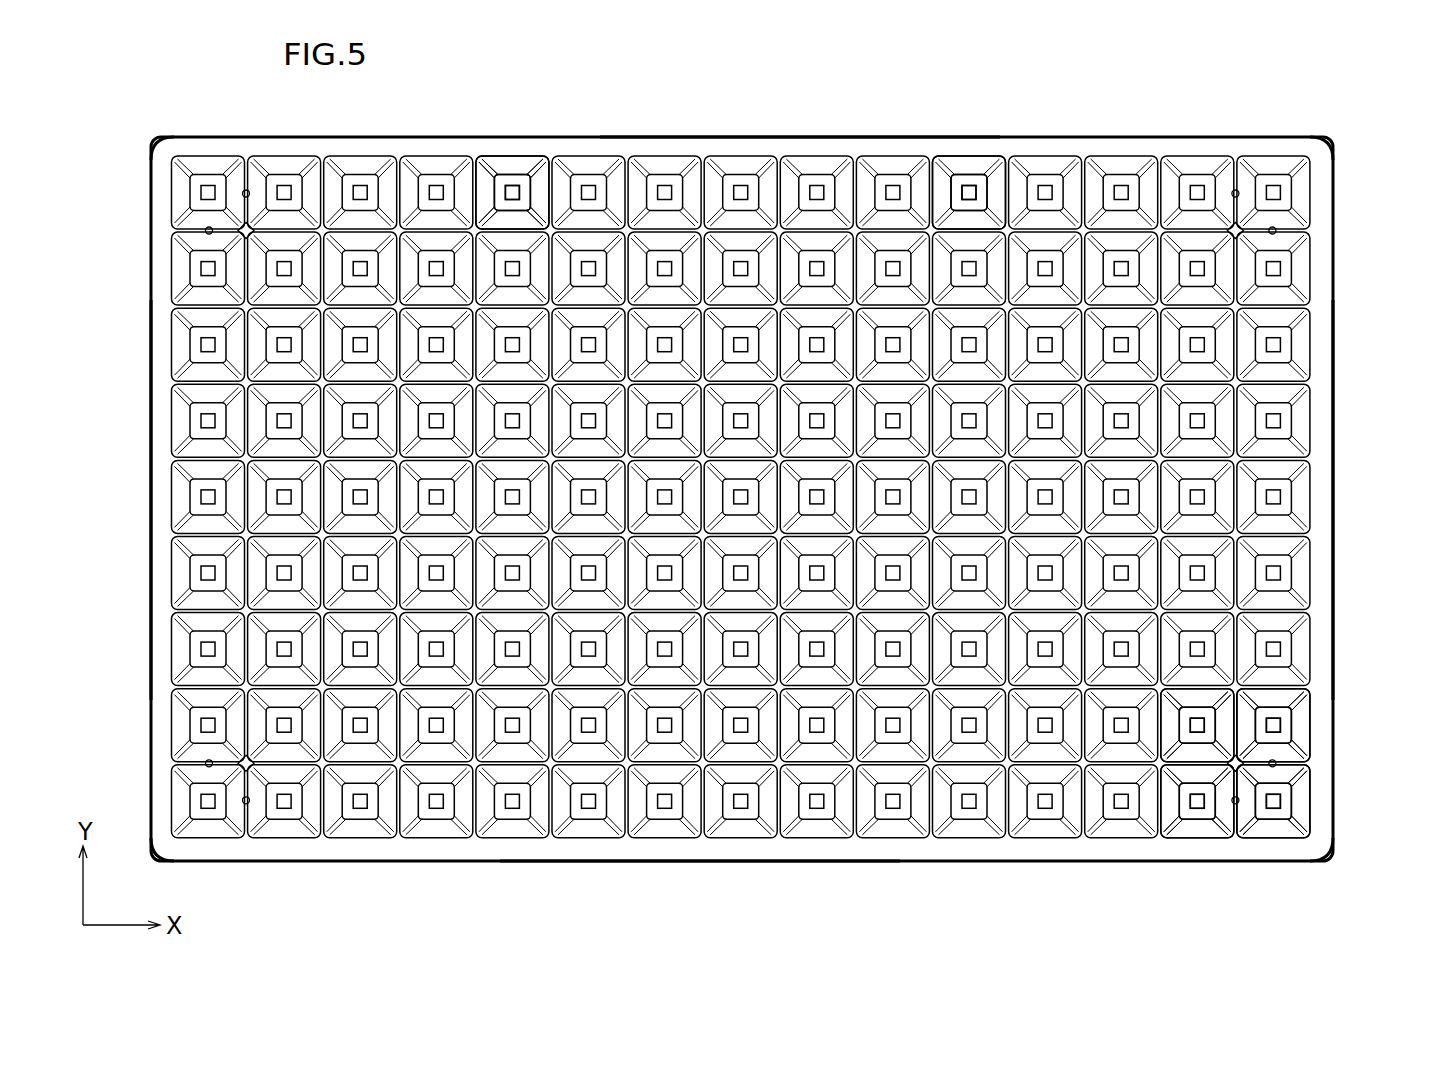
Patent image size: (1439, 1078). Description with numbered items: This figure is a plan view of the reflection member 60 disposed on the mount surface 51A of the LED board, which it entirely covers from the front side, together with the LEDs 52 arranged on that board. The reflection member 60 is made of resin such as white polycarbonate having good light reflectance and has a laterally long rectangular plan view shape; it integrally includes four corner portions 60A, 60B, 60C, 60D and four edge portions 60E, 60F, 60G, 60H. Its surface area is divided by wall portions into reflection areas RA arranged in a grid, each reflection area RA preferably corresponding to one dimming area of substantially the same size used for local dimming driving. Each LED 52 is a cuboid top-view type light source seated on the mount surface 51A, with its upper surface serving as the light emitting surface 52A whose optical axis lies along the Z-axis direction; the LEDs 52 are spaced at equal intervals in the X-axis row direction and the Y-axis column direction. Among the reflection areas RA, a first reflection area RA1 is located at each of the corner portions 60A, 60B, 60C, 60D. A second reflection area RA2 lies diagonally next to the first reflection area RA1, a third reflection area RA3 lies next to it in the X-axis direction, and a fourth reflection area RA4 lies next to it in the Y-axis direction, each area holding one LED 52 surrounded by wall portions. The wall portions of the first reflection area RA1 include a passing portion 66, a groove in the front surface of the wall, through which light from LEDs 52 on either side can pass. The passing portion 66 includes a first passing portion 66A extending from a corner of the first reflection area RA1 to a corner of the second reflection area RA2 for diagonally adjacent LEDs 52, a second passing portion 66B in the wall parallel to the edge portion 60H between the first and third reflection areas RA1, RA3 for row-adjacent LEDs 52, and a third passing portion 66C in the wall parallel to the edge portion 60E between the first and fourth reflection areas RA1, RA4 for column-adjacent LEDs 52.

The reflection member 60 is at (1217, 114).
The corner portion 60A is at (1333, 860).
The corner portion 60B is at (150, 859).
The corner portion 60C is at (152, 135).
The corner portion 60D is at (1333, 137).
The edge portion 60E is at (692, 862).
The edge portion 60F is at (151, 478).
The edge portion 60G is at (818, 136).
The edge portion 60H is at (1333, 391).
The reflection area RA is at (510, 168).
The first reflection area RA1 is at (1303, 805).
The second reflection area RA2 is at (1218, 728).
The third reflection area RA3 is at (1172, 805).
The fourth reflection area RA4 is at (1303, 727).
The LED 52 is at (963, 197).
The mount surface 51A is at (970, 180).
The light emitting surface 52A is at (978, 193).
The passing portion 66 is at (762, 575).
The first passing portion 66A is at (1231, 772).
The second passing portion 66B is at (1236, 804).
The third passing portion 66C is at (1274, 768).